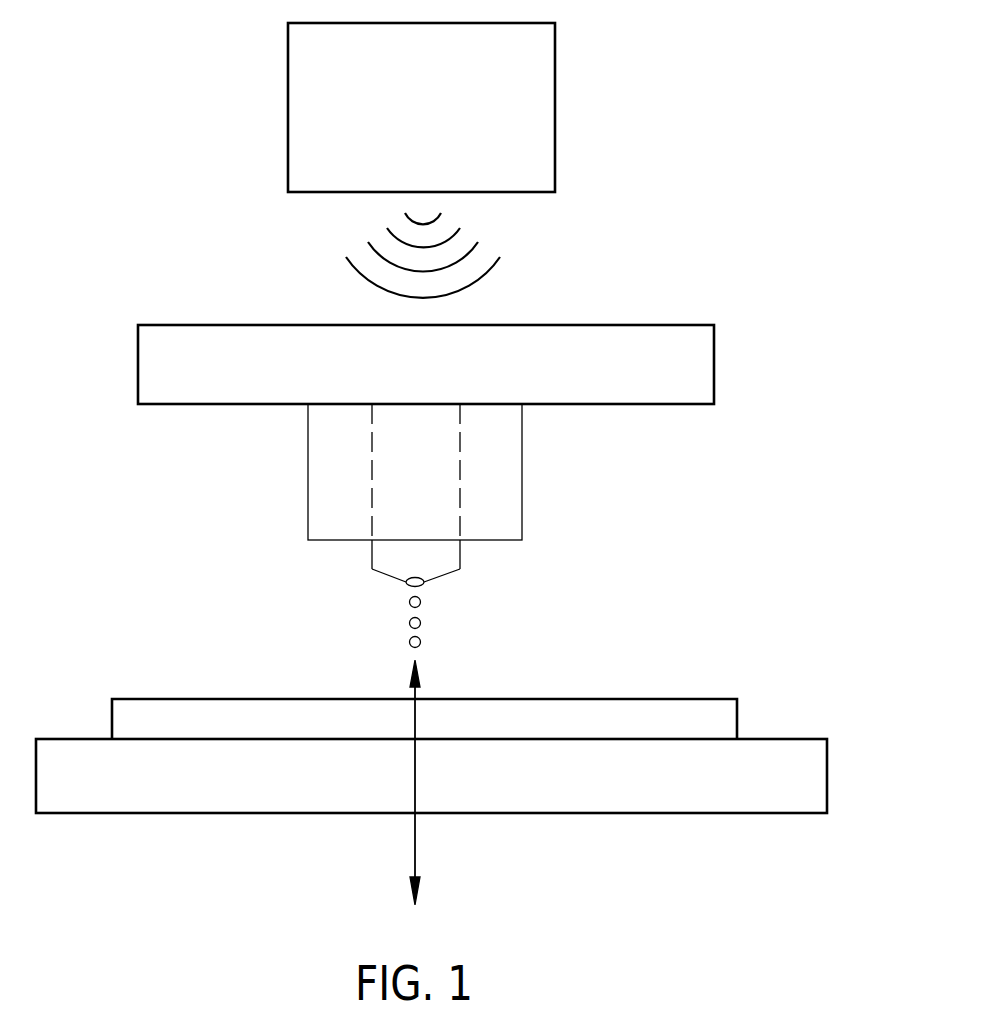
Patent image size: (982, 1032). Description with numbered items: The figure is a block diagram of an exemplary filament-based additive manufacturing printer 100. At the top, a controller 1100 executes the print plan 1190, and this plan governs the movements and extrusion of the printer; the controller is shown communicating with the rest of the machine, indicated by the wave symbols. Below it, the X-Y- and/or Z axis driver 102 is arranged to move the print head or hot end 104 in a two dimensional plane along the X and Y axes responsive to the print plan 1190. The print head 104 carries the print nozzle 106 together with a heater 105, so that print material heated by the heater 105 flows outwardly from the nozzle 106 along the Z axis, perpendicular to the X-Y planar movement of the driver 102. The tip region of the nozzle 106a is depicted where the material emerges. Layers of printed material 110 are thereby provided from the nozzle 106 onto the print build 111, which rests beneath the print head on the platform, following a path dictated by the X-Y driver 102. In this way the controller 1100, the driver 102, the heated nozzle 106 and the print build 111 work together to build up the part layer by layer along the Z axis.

The filament-based printer 100 is at (797, 163).
The controller 1100 is at (352, 107).
The print plan 1190 is at (455, 125).
The X-Y- and/or Z axis driver 102 is at (714, 360).
The print head 104 is at (298, 410).
The heater 105 is at (522, 472).
The print nozzle 106 is at (460, 569).
The nozzle tip 106a is at (425, 582).
The printed material 110 is at (422, 598).
The print build 111 is at (737, 718).